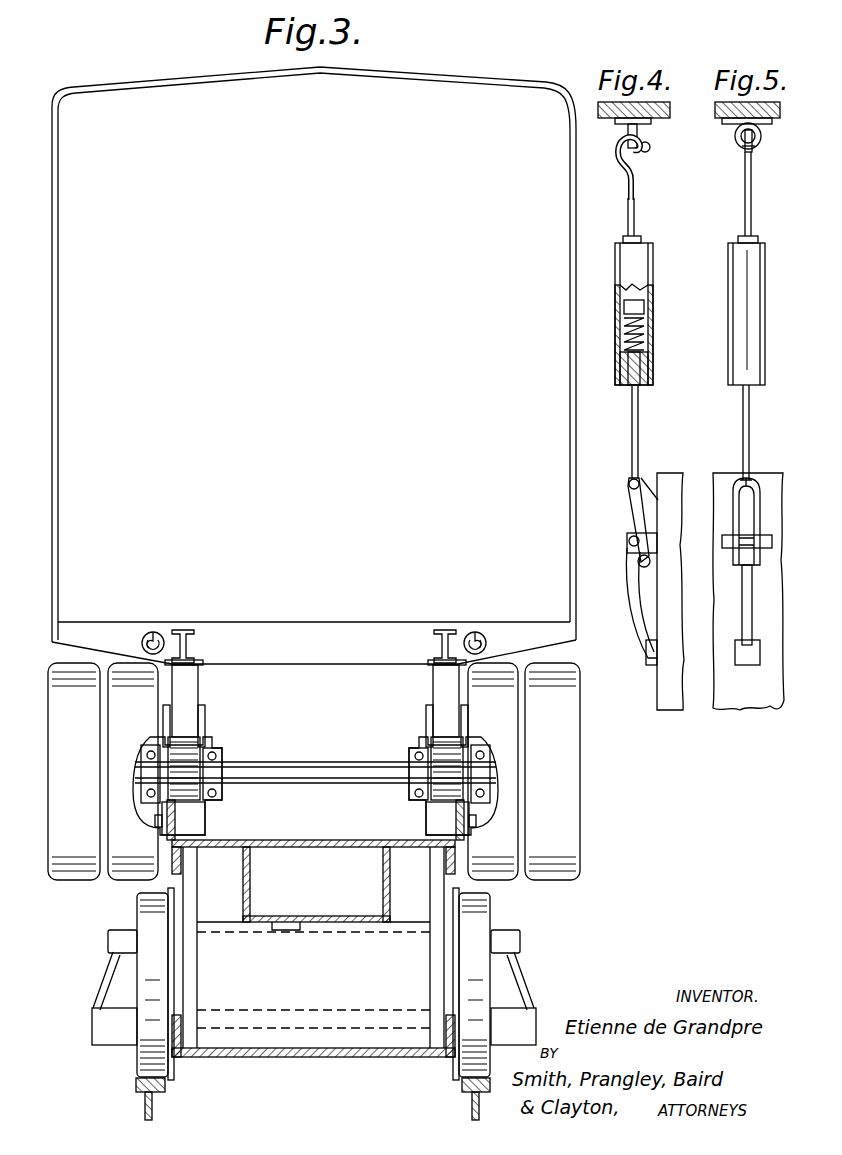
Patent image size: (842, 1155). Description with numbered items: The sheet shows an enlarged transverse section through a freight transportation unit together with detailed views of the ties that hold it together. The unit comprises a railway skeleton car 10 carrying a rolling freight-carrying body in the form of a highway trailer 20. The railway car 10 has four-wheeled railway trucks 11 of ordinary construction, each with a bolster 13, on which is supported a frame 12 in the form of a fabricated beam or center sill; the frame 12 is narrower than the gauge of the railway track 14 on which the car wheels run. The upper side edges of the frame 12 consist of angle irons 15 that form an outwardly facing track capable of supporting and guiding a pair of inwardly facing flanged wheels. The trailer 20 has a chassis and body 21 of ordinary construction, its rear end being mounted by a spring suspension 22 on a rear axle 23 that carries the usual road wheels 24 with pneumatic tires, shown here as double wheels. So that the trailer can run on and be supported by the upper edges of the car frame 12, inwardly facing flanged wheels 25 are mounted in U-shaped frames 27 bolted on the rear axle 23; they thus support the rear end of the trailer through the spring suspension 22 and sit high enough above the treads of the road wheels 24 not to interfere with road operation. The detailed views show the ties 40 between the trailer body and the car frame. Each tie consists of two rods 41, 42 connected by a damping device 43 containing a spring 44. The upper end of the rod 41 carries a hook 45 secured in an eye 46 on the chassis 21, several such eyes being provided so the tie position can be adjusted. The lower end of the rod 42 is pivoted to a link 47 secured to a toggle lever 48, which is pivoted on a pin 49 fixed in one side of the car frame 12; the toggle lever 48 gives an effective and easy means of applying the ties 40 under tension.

In FIG. 3, the railway skeleton car 10 is at (354, 836).
In FIG. 3, the railway truck 11 is at (100, 1020).
In FIG. 3, the frame 12 is at (380, 1040).
In FIG. 4, the frame 12 is at (656, 686).
In FIG. 5, the frame 12 is at (724, 648).
In FIG. 3, the bolster 13 is at (326, 976).
In FIG. 3, the railway track 14 is at (155, 1105).
In FIG. 3, the angle iron 15 is at (215, 842).
In FIG. 3, the trailer 20 is at (328, 164).
In FIG. 3, the chassis and body 21 is at (410, 646).
In FIG. 4, the chassis and body 21 is at (604, 116).
In FIG. 5, the chassis and body 21 is at (722, 121).
In FIG. 3, the spring suspension 22 is at (178, 740).
In FIG. 3, the rear axle 23 is at (340, 768).
In FIG. 3, the road wheel 24 is at (80, 876).
In FIG. 3, the flanged wheel 25 is at (195, 822).
In FIG. 3, the U-shaped frame 27 is at (222, 755).
In FIG. 4, the tie 40 is at (612, 390).
In FIG. 5, the tie 40 is at (727, 414).
In FIG. 4, the rod 41 is at (636, 212).
In FIG. 5, the rod 41 is at (754, 212).
In FIG. 4, the rod 42 is at (640, 432).
In FIG. 5, the rod 42 is at (750, 434).
In FIG. 4, the damping device 43 is at (648, 275).
In FIG. 5, the damping device 43 is at (763, 290).
In FIG. 4, the spring 44 is at (646, 325).
In FIG. 3, the hook 45 is at (145, 638).
In FIG. 4, the hook 45 is at (650, 148).
In FIG. 5, the hook 45 is at (742, 152).
In FIG. 3, the eye 46 is at (155, 632).
In FIG. 4, the eye 46 is at (616, 148).
In FIG. 5, the eye 46 is at (762, 140).
In FIG. 4, the link 47 is at (630, 508).
In FIG. 5, the link 47 is at (730, 520).
In FIG. 4, the toggle lever 48 is at (630, 590).
In FIG. 5, the toggle lever 48 is at (742, 594).
In FIG. 4, the pin 49 is at (626, 541).
In FIG. 5, the pin 49 is at (735, 536).